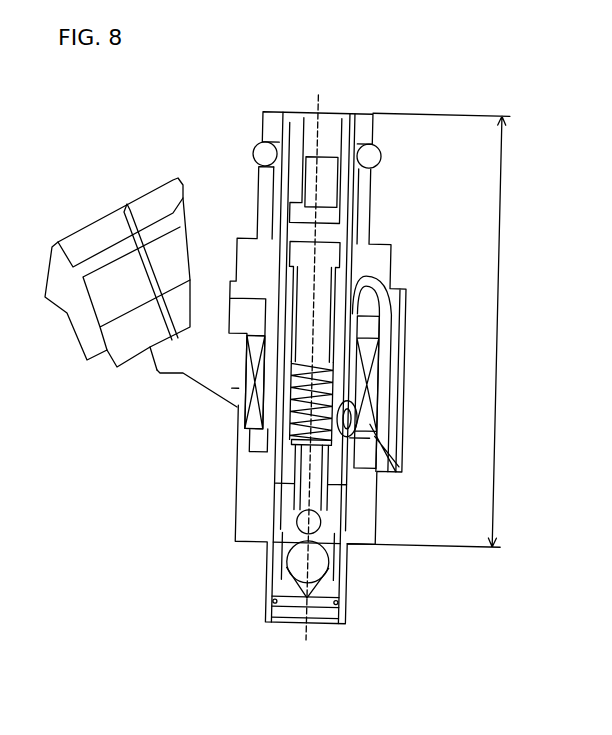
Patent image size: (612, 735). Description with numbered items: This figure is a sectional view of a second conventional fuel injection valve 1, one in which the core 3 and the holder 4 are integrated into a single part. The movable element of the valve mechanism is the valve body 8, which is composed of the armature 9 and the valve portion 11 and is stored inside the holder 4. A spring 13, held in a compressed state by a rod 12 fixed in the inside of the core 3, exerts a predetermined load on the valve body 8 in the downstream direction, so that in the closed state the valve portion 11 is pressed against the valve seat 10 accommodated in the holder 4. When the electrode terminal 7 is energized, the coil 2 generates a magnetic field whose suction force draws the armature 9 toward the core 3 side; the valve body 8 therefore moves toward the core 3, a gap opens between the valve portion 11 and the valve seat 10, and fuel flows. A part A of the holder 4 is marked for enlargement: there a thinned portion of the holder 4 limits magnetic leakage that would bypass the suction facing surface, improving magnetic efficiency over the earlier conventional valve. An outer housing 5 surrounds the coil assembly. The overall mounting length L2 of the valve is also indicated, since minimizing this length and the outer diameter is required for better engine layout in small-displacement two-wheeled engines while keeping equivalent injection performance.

The fuel injection valve 1 is at (342, 93).
The coil 2 is at (362, 425).
The core 3 is at (347, 268).
The holder 4 is at (268, 482).
The outer shell / yoke 5 is at (405, 378).
The electrode terminal 7 is at (132, 195).
The valve body 8 is at (416, 594).
The armature 9 is at (342, 592).
The valve seat 10 is at (278, 586).
The valve portion 11 is at (350, 601).
The rod 12 is at (320, 302).
The spring 13 is at (250, 412).
The part A is at (397, 470).
The mounting length L2 is at (500, 270).